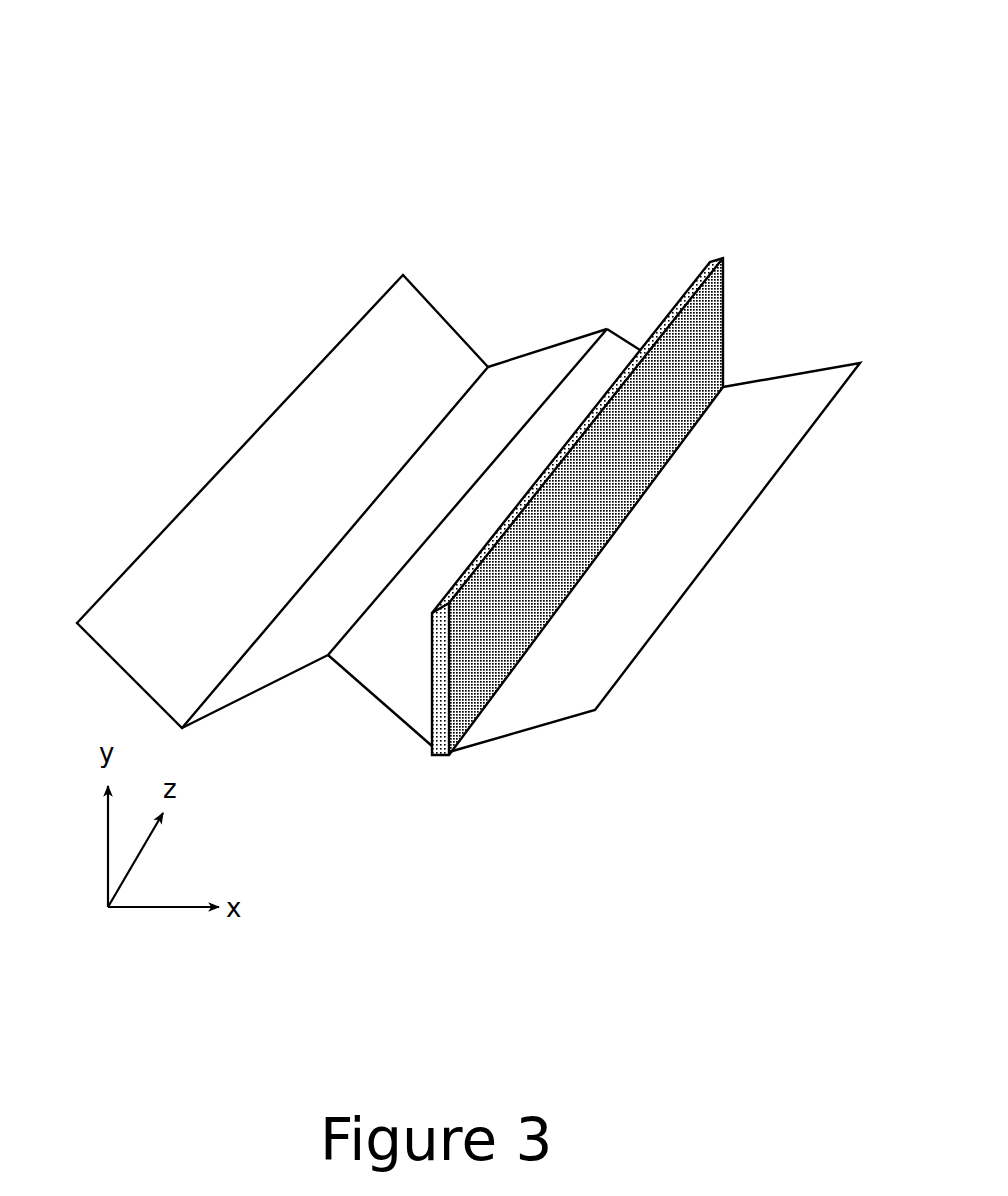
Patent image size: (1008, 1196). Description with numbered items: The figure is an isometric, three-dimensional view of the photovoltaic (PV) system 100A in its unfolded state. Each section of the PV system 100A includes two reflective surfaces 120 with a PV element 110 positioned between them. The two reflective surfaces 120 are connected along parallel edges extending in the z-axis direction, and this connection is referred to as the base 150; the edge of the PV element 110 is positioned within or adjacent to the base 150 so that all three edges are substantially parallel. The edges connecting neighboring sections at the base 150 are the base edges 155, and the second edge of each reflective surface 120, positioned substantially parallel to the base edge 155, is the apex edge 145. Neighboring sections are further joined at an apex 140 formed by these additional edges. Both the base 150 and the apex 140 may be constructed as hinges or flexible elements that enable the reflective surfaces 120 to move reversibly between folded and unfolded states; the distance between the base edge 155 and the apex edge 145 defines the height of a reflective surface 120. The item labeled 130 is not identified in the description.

The photovoltaic (PV) system 100A is at (360, 131).
The PV element 110 is at (713, 255).
The reflective surface 120 is at (330, 425).
The right wing surface 130 is at (752, 402).
The apex 140 is at (602, 315).
The apex edge 145 is at (437, 520).
The base 150 is at (441, 765).
The base edge 155 is at (294, 575).